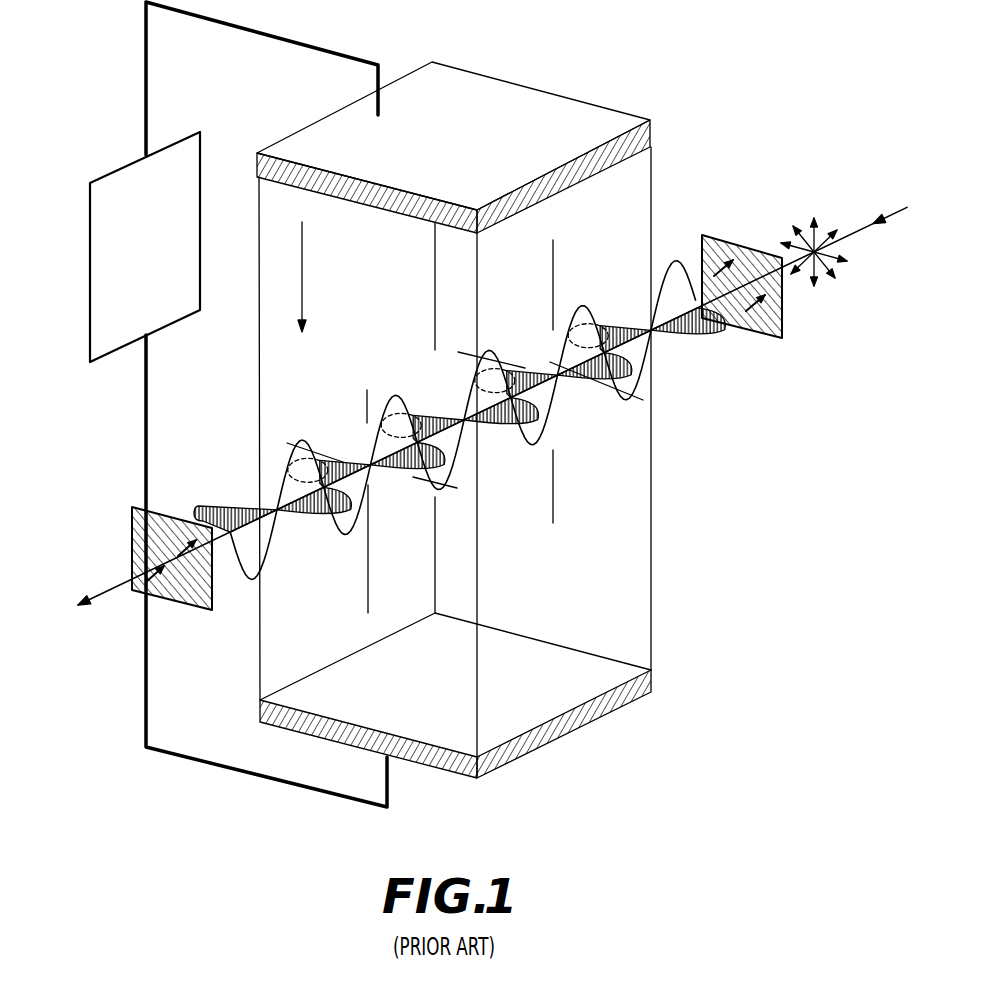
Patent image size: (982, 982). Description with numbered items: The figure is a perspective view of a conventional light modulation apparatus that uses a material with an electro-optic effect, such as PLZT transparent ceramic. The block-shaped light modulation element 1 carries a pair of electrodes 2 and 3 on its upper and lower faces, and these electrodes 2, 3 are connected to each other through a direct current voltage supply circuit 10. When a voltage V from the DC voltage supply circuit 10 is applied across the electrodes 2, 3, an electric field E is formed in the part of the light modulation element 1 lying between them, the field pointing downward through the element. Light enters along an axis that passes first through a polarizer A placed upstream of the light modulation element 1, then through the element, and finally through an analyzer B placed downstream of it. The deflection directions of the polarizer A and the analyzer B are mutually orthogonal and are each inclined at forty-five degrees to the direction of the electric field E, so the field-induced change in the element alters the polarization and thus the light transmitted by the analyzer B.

The light modulation element 1 is at (630, 572).
The electrode 2 is at (572, 117).
The electrode 3 is at (578, 728).
The direct current voltage supply circuit 10 is at (103, 214).
The polarizer A is at (747, 299).
The analyzer B is at (178, 573).
The electric field E is at (313, 277).
The voltage V is at (272, 404).